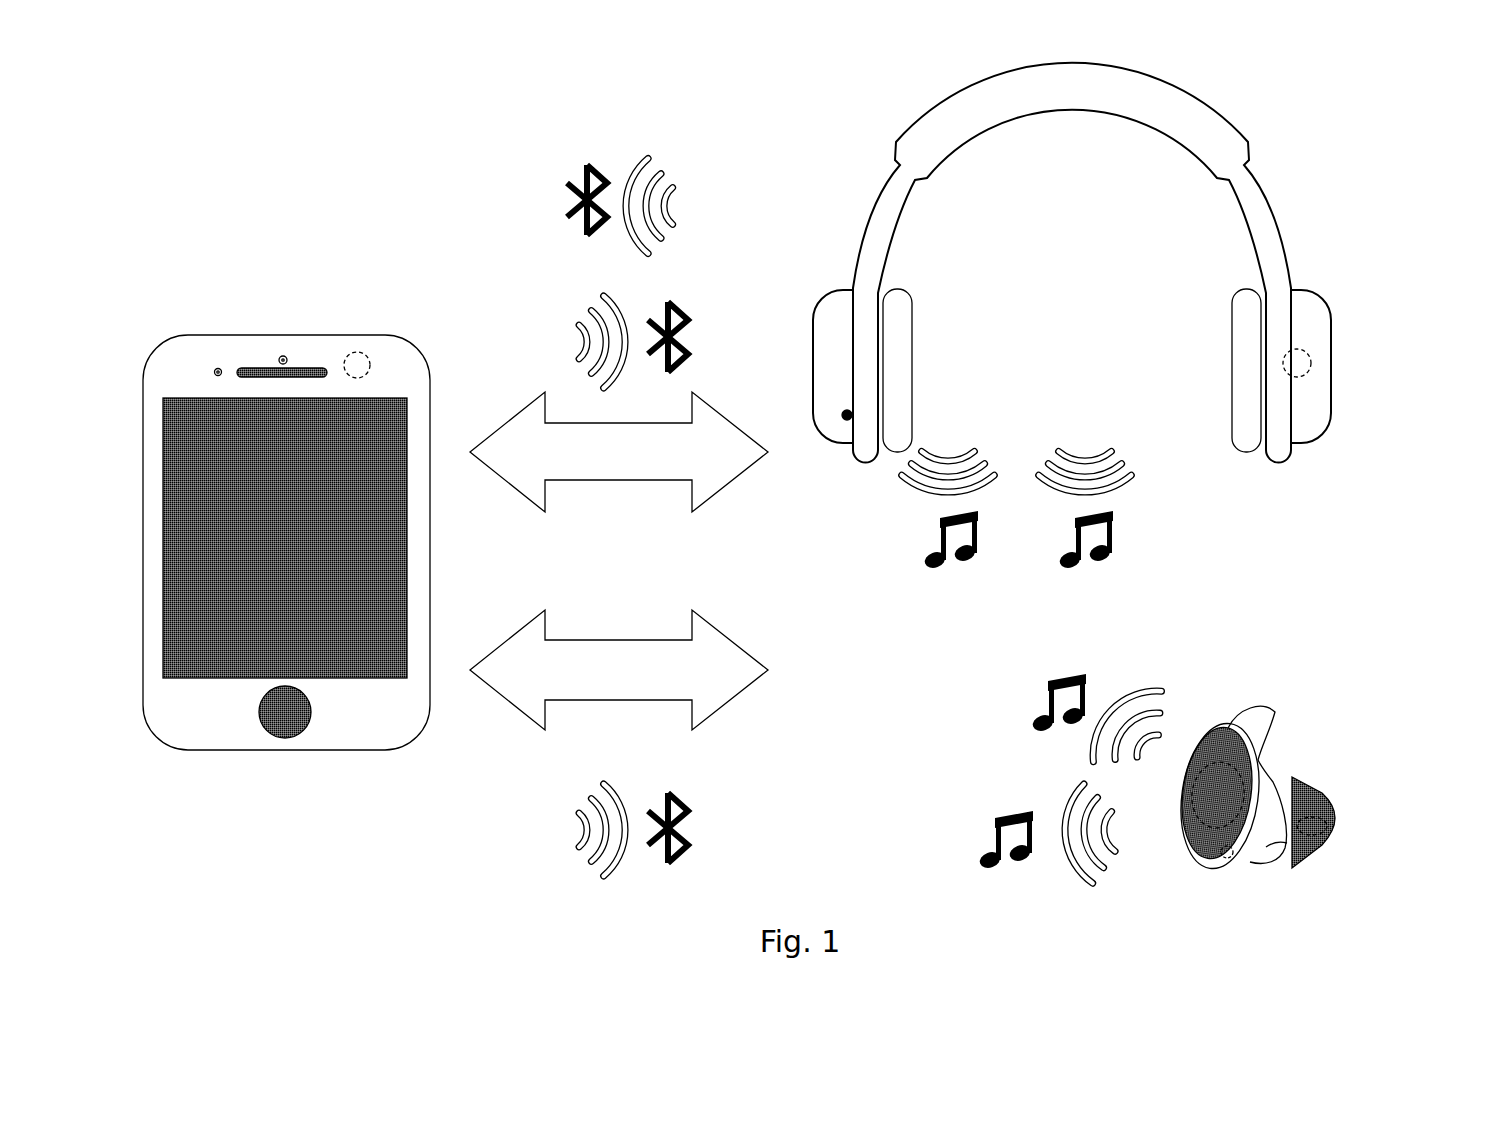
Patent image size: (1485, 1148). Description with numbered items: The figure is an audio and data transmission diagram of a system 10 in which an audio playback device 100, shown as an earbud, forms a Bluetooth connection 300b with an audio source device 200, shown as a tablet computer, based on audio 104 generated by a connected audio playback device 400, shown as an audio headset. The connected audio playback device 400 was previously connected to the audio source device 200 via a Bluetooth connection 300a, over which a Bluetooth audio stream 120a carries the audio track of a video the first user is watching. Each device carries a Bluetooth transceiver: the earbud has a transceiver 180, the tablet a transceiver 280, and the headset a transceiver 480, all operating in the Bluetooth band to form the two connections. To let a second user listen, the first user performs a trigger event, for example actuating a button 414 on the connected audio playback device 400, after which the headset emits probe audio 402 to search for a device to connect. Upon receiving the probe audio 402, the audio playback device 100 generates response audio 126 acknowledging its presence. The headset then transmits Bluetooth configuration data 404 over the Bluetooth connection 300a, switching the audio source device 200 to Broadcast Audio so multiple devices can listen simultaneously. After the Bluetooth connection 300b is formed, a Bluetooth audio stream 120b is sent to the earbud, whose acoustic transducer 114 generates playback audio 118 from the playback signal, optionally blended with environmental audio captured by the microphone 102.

The system 10 is at (248, 97).
The audio source device 200 is at (231, 338).
The transceiver 280 is at (372, 357).
The Bluetooth connection 300a is at (619, 452).
The Bluetooth connection 300b is at (619, 670).
The Bluetooth configuration data 404 is at (683, 147).
The Bluetooth audio stream 120a is at (588, 282).
The Bluetooth audio stream 120b is at (588, 773).
The connected audio playback device 400 is at (1163, 75).
The transceiver 480 is at (1309, 354).
The button 414 is at (845, 420).
The audio 104 is at (957, 437).
The probe audio 402 is at (1097, 437).
The response audio 126 is at (1178, 682).
The playback audio 118 is at (1052, 800).
The audio playback device 100 is at (1330, 797).
The transceiver 180 is at (1328, 827).
The acoustic transducer 114 is at (1205, 805).
The microphone 102 is at (1222, 857).